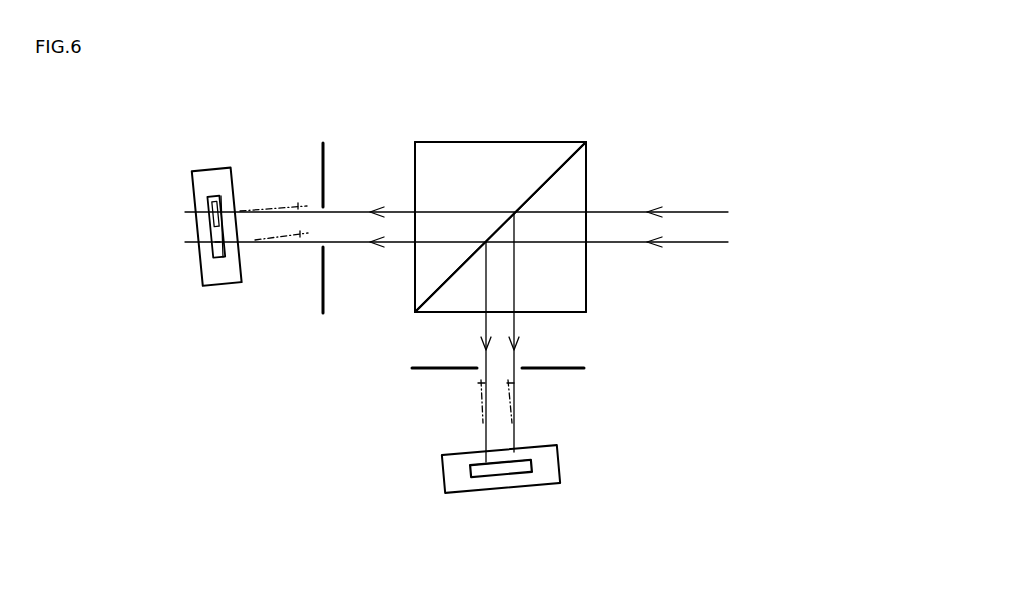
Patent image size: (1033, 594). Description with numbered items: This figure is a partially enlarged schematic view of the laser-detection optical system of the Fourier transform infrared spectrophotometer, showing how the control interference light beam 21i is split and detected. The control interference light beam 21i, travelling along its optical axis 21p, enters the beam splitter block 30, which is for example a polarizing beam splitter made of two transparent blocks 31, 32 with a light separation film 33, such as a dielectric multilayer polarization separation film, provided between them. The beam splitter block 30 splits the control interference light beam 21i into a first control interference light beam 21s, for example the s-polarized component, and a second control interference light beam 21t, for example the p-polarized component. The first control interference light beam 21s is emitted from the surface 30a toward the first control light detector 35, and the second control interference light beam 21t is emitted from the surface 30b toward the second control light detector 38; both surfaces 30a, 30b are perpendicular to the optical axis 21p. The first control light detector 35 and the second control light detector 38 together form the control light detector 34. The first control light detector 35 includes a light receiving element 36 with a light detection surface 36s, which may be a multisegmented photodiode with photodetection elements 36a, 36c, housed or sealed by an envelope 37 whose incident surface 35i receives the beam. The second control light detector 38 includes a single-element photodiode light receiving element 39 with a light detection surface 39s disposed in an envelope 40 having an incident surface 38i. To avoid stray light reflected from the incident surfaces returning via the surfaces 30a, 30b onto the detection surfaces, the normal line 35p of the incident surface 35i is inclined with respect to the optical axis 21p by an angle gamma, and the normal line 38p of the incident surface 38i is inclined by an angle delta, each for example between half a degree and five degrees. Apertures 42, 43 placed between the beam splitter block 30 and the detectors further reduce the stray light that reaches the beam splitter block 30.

The beam splitter block 30 is at (495, 212).
The surface 30a is at (415, 147).
The surface 30b is at (582, 313).
The transparent block 31 is at (474, 155).
The transparent block 32 is at (574, 188).
The light separation film 33 is at (562, 160).
The control light detector 34 is at (370, 328).
The first control light detector 35 is at (210, 228).
The normal line 35p is at (270, 208).
The incident surface 35i is at (272, 277).
The light receiving element 36 is at (169, 227).
The photodetection element 36a is at (215, 212).
The photodetection element 36c is at (215, 242).
The light detection surface 36s is at (222, 205).
The envelope 37 is at (213, 279).
The second control light detector 38 is at (497, 462).
The normal line 38p is at (481, 412).
The incident surface 38i is at (503, 452).
The light receiving element 39 is at (498, 477).
The light detection surface 39s is at (475, 465).
The envelope 40 is at (553, 455).
The aperture 42 is at (323, 317).
The aperture 43 is at (410, 368).
The control interference light beam 21i is at (702, 244).
The optical axis 21p is at (500, 227).
The first control interference light beam 21s is at (373, 262).
The second control interference light beam 21t is at (483, 325).